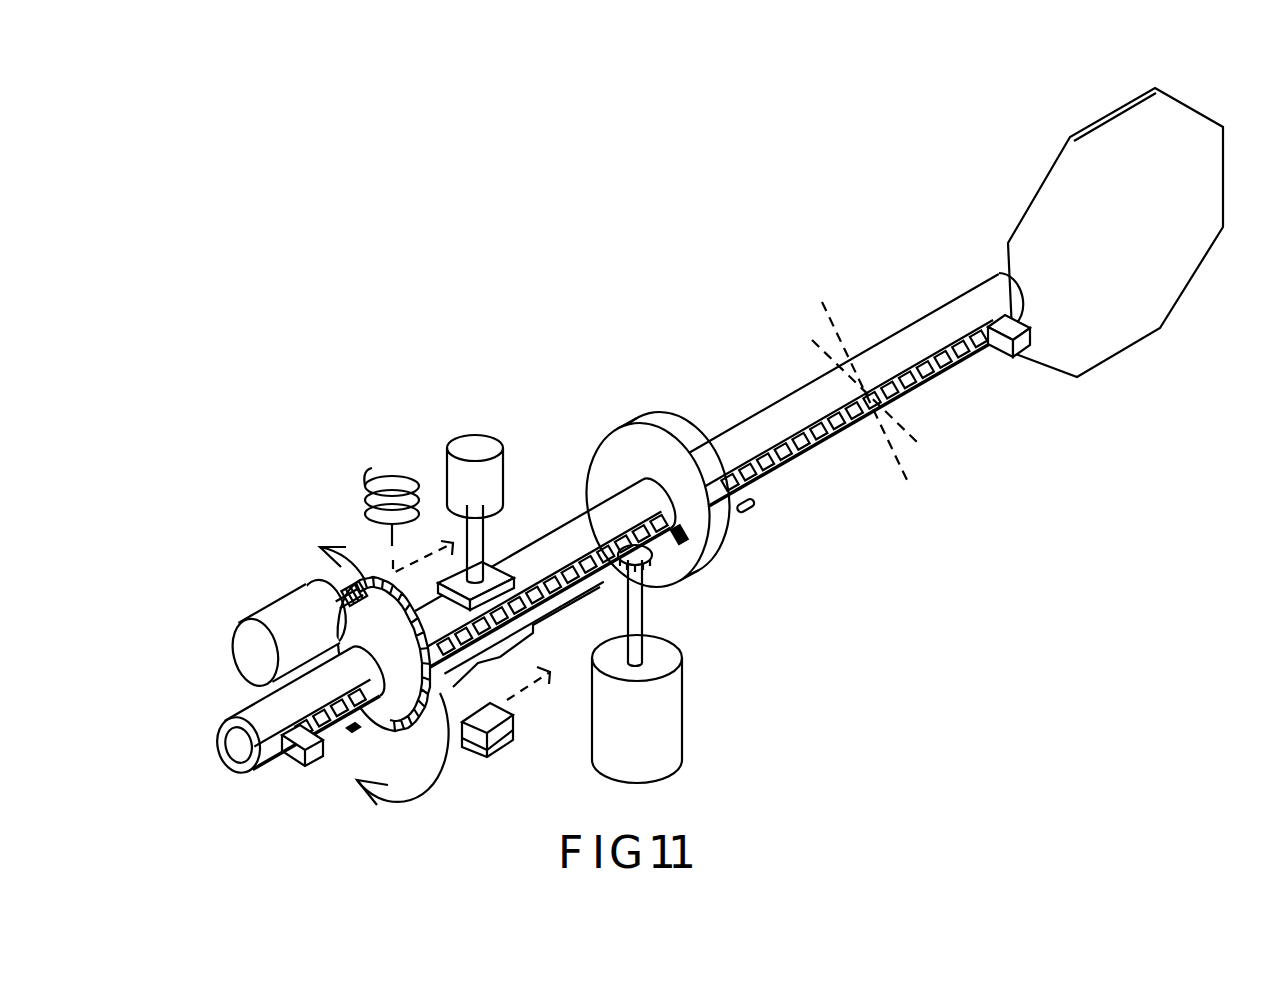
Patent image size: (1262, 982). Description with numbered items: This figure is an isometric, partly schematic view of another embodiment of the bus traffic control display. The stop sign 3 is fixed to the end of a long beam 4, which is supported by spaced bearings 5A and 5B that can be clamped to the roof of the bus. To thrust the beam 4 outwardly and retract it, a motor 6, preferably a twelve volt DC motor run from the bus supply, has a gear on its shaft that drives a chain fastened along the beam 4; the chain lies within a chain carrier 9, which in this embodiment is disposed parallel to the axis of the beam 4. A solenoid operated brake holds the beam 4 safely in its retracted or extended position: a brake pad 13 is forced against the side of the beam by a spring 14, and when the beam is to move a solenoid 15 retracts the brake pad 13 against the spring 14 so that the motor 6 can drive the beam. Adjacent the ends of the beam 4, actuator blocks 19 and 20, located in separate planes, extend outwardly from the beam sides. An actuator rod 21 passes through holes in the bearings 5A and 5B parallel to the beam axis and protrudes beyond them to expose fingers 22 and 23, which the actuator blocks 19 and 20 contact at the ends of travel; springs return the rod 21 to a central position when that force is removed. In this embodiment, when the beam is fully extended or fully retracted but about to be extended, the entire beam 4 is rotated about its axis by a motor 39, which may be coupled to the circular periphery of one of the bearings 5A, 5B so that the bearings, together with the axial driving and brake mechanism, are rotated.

The stop sign 3 is at (1035, 182).
The beam 4 is at (775, 400).
The bearing 5A is at (623, 423).
The bearing 5B is at (423, 740).
The motor 6 is at (682, 680).
The chain carrier 9 is at (832, 408).
The brake pad 13 is at (500, 553).
The spring 14 is at (390, 476).
The solenoid 15 is at (462, 440).
The actuator block 19 is at (1020, 358).
The actuator block 20 is at (297, 733).
The actuator rod 21 is at (603, 595).
The finger 22 is at (747, 508).
The finger 23 is at (352, 730).
The motor 39 is at (290, 583).